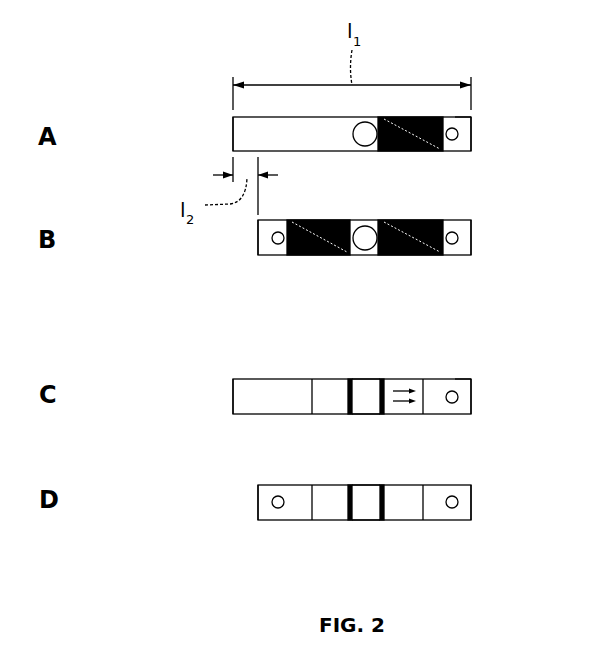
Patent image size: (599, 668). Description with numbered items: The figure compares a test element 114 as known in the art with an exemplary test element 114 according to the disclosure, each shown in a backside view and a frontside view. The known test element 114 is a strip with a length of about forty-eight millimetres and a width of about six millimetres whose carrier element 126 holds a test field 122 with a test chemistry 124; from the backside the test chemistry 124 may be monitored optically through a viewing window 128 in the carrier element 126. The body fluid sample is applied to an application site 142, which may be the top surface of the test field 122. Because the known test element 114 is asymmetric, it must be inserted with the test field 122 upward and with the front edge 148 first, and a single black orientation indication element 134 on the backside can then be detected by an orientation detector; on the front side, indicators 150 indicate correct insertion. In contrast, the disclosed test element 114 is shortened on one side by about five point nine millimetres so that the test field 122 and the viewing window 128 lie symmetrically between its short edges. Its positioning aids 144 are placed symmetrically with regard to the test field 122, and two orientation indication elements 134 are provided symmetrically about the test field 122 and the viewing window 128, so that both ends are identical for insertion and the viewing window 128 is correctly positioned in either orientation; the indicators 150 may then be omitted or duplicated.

The test element 114 is at (462, 133).
The test field 122 is at (365, 402).
The test chemistry 124 is at (382, 449).
The carrier element 126 is at (243, 134).
The viewing window 128 is at (365, 147).
The orientation indication element 134 is at (410, 151).
The application site 142 is at (366, 449).
The positioning aids 144 is at (452, 140).
The front edge 148 is at (470, 124).
The indicators indicating a correct insertion 150 is at (398, 386).